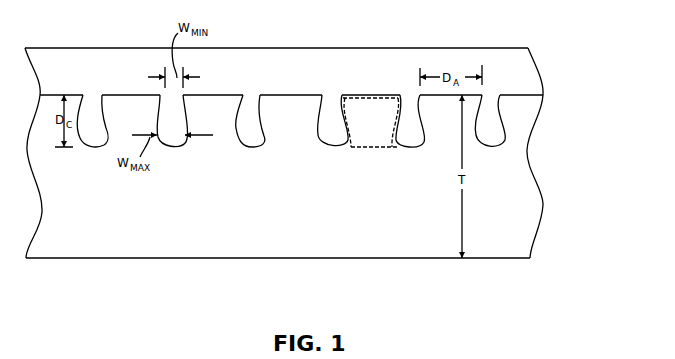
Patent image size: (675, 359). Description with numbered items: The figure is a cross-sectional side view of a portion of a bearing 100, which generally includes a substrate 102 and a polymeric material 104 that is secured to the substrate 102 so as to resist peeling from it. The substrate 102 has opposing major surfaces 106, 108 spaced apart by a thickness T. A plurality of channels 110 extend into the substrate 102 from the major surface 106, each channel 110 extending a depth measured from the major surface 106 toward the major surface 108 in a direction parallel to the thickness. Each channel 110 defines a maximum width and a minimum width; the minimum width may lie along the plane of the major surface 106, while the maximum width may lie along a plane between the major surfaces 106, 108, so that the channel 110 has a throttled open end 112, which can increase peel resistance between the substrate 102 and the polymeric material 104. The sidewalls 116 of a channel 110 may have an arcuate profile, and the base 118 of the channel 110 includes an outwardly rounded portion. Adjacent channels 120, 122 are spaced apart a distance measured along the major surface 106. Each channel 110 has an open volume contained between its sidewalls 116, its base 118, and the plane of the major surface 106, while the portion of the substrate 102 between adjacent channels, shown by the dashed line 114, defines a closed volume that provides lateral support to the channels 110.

The bearing 100 is at (420, 25).
The substrate 102 is at (535, 204).
The polymeric material 104 is at (522, 67).
The major surface 106 is at (304, 92).
The major surface 108 is at (294, 266).
The channel 110 is at (327, 123).
The throttled open end 112 is at (93, 91).
The dashed line 114 is at (376, 149).
The sidewall 116 is at (229, 142).
The base 118 is at (265, 150).
The channel 120 is at (346, 149).
The channel 122 is at (419, 149).